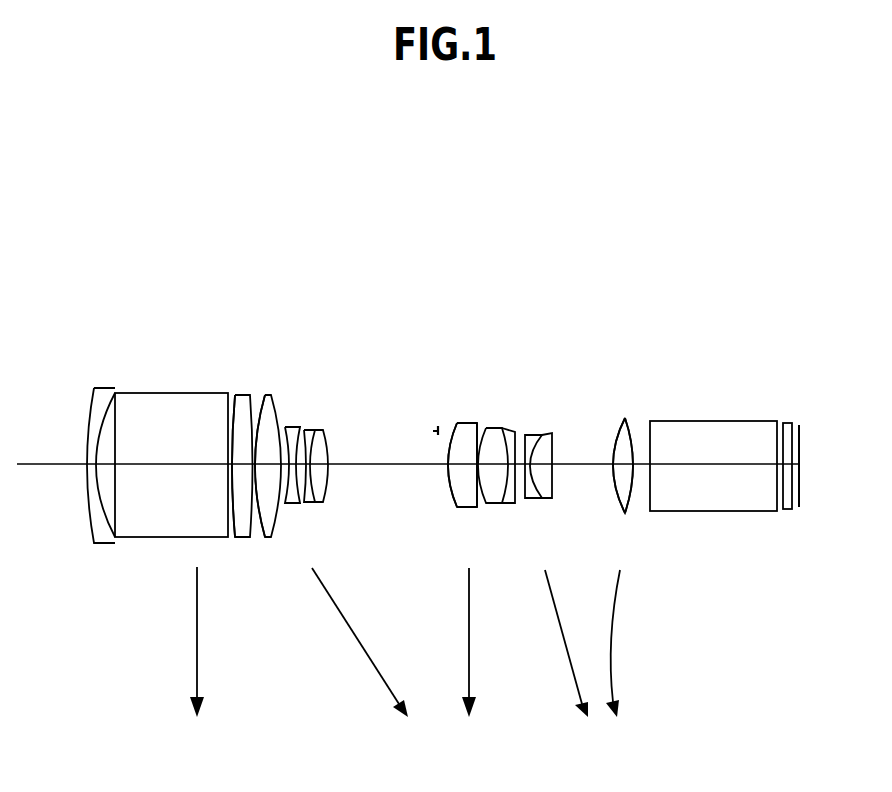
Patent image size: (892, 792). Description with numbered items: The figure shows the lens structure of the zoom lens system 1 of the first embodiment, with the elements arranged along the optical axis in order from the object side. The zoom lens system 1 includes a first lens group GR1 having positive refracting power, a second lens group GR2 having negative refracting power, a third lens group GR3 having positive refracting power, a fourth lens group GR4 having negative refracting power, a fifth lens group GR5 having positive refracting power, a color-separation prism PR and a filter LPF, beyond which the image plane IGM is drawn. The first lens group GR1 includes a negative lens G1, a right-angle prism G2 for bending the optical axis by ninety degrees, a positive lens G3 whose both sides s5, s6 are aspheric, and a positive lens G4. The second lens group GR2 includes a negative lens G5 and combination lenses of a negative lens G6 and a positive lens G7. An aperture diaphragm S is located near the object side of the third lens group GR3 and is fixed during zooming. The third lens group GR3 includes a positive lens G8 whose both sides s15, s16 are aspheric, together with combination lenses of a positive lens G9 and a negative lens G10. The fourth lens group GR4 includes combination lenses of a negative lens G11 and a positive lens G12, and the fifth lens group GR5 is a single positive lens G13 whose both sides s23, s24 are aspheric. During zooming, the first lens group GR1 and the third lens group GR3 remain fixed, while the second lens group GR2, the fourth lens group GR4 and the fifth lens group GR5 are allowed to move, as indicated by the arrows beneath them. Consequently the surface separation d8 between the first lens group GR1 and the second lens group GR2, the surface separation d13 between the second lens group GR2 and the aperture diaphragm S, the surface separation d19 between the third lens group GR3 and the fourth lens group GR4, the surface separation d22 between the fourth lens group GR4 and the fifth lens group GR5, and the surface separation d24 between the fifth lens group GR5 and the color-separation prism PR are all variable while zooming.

The zoom lens system 1 is at (394, 240).
The first lens group GR1 is at (258, 291).
The second lens group GR2 is at (363, 291).
The third lens group GR3 is at (520, 291).
The fourth lens group GR4 is at (637, 291).
The fifth lens group GR5 is at (698, 291).
The negative lens G1 is at (107, 386).
The right-angle prism G2 is at (161, 393).
The positive lens G3 is at (242, 393).
The positive lens G4 is at (270, 393).
The negative lens G5 is at (293, 427).
The negative lens G6 is at (310, 430).
The positive lens G7 is at (324, 430).
The positive lens G8 is at (460, 423).
The positive lens G9 is at (490, 428).
The negative lens G10 is at (507, 432).
The negative lens G11 is at (532, 435).
The positive lens G12 is at (552, 435).
The positive lens G13 is at (625, 418).
The aperture diaphragm S is at (435, 431).
The side of positive lens G3 s5 is at (232, 518).
The side of positive lens G3 s6 is at (256, 522).
The side of positive lens G8 s15 is at (455, 423).
The side of positive lens G8 s16 is at (478, 505).
The side of positive lens G13 s23 is at (613, 433).
The side of positive lens G13 s24 is at (633, 433).
The surface separation d8 is at (282, 466).
The surface separation d13 is at (375, 467).
The surface separation d19 is at (518, 467).
The surface separation d22 is at (580, 467).
The surface separation d24 is at (641, 467).
The color-separation prism PR is at (755, 421).
The filter LPF is at (786, 423).
The image plane IGM is at (799, 490).